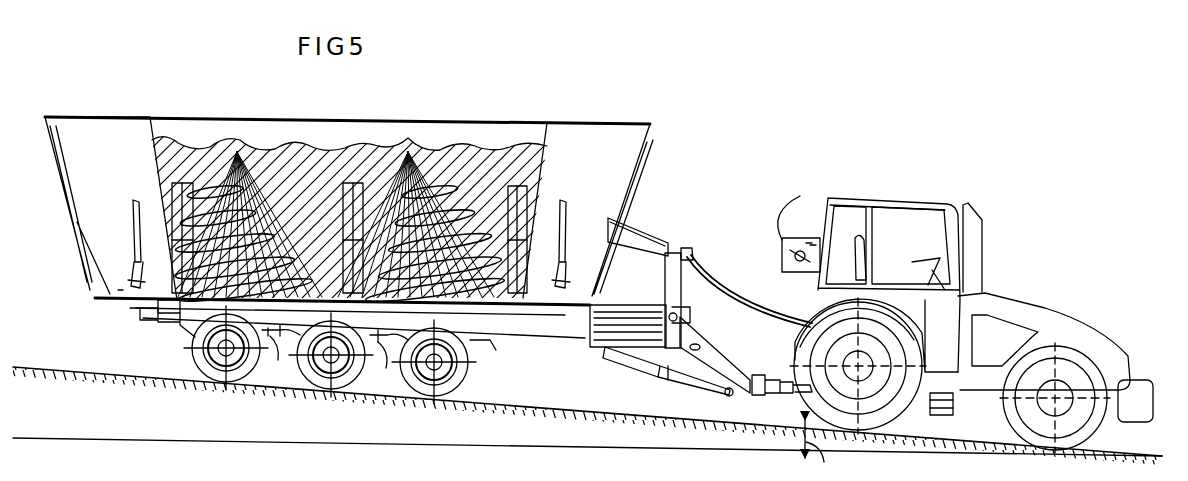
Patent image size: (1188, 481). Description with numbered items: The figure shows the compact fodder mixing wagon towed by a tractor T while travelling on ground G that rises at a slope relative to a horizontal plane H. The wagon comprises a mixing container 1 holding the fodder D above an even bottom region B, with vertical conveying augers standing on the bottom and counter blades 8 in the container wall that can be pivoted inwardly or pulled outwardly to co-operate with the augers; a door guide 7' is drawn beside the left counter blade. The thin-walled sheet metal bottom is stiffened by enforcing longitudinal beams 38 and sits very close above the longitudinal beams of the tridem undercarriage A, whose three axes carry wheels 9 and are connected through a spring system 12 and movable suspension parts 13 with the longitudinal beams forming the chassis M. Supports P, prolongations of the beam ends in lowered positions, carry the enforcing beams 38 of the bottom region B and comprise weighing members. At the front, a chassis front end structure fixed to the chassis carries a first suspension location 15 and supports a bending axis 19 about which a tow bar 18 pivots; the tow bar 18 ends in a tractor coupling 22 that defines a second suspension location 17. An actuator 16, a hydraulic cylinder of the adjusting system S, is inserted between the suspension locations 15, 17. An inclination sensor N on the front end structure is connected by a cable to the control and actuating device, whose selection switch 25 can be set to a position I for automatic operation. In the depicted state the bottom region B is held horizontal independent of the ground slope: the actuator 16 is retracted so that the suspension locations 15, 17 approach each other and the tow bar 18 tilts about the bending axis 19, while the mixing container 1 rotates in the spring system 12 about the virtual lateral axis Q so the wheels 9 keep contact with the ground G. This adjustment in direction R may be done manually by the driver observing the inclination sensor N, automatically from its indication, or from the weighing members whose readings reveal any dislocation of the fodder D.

The mixing container 1 is at (580, 148).
The counter blades 8 is at (132, 258).
The door guide 7' is at (117, 273).
The enforcing longitudinal beams 38 is at (132, 312).
The wheels 9 is at (312, 378).
The spring system 12 is at (386, 345).
The movable suspension parts 13 is at (365, 380).
The first suspension location 15 is at (600, 350).
The actuator 16 is at (664, 372).
The second suspension location 17 is at (730, 388).
The tow bar 18 is at (712, 356).
The bending axis 19 is at (690, 292).
The tractor coupling 22 is at (790, 370).
The selection switch 25 is at (802, 263).
The fodder D is at (478, 163).
The bottom region B is at (163, 288).
The chassis M is at (127, 331).
The virtual lateral axis Q is at (190, 333).
The undercarriage A is at (186, 357).
The supports P is at (505, 335).
The direction R is at (503, 325).
The inclination sensor N is at (688, 247).
The adjusting system S is at (701, 233).
The position I is at (790, 240).
The tractor T is at (996, 281).
The ground G is at (590, 407).
The horizontal plane H is at (530, 447).